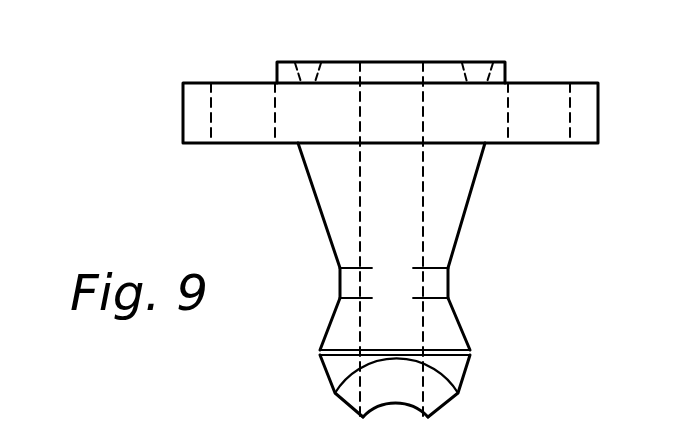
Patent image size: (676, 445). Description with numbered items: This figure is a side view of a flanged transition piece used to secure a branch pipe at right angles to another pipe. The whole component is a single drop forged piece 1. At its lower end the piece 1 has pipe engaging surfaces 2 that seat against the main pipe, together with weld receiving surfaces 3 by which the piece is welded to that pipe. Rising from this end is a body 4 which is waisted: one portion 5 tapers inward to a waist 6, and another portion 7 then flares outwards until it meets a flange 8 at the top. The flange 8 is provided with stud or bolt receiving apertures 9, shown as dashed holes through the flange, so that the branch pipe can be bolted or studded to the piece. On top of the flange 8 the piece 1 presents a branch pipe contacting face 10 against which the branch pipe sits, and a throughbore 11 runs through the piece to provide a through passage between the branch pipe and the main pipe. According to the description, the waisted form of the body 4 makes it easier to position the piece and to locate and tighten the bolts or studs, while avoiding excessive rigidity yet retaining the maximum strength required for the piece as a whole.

The single drop forged piece 1 is at (296, 161).
The pipe engaging surfaces 2 is at (440, 398).
The weld receiving surfaces 3 is at (455, 369).
The body 4 is at (447, 235).
The tapering portion 5 is at (340, 325).
The waist 6 is at (437, 285).
The flaring portion 7 is at (335, 203).
The flange 8 is at (521, 126).
The stud or bolt receiving apertures 9 is at (212, 95).
The branch pipe contacting face 10 is at (337, 62).
The throughbore 11 is at (421, 72).